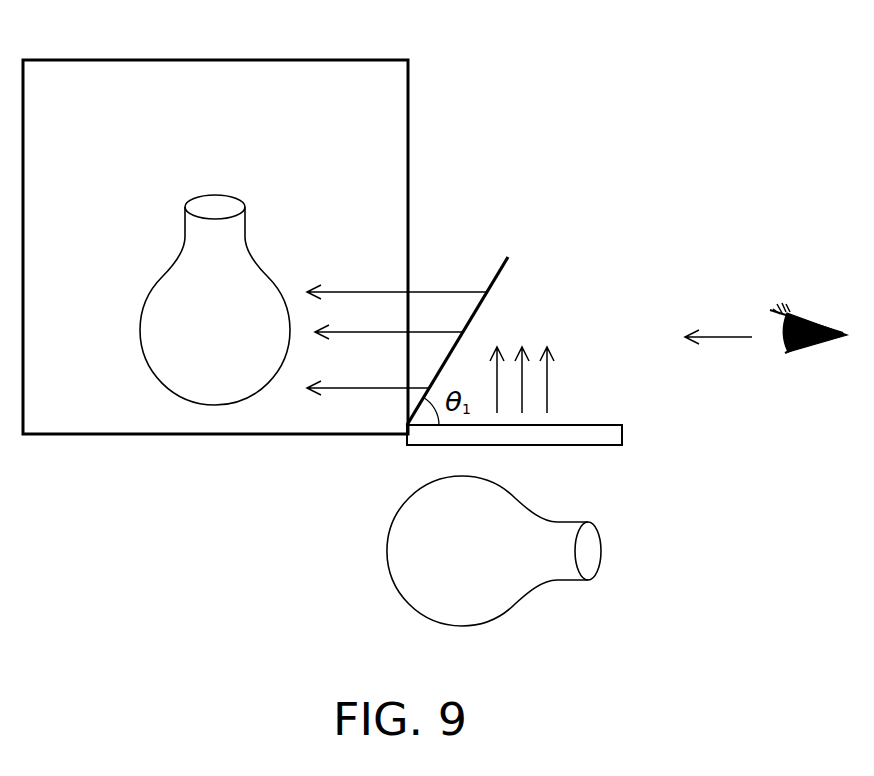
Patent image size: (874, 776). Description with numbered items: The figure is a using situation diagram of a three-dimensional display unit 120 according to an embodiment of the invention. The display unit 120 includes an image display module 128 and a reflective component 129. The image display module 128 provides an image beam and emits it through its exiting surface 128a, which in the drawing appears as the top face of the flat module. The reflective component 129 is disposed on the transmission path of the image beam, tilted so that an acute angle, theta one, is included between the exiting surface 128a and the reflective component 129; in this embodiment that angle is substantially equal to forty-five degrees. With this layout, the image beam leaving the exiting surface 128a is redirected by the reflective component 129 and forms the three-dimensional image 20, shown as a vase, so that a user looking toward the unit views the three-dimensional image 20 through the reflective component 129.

The 3-D image 20 is at (242, 196).
The 3-D display unit 120 is at (616, 293).
The image display module 128 is at (587, 440).
The exiting surface 128a is at (594, 416).
The reflective component 129 is at (500, 267).